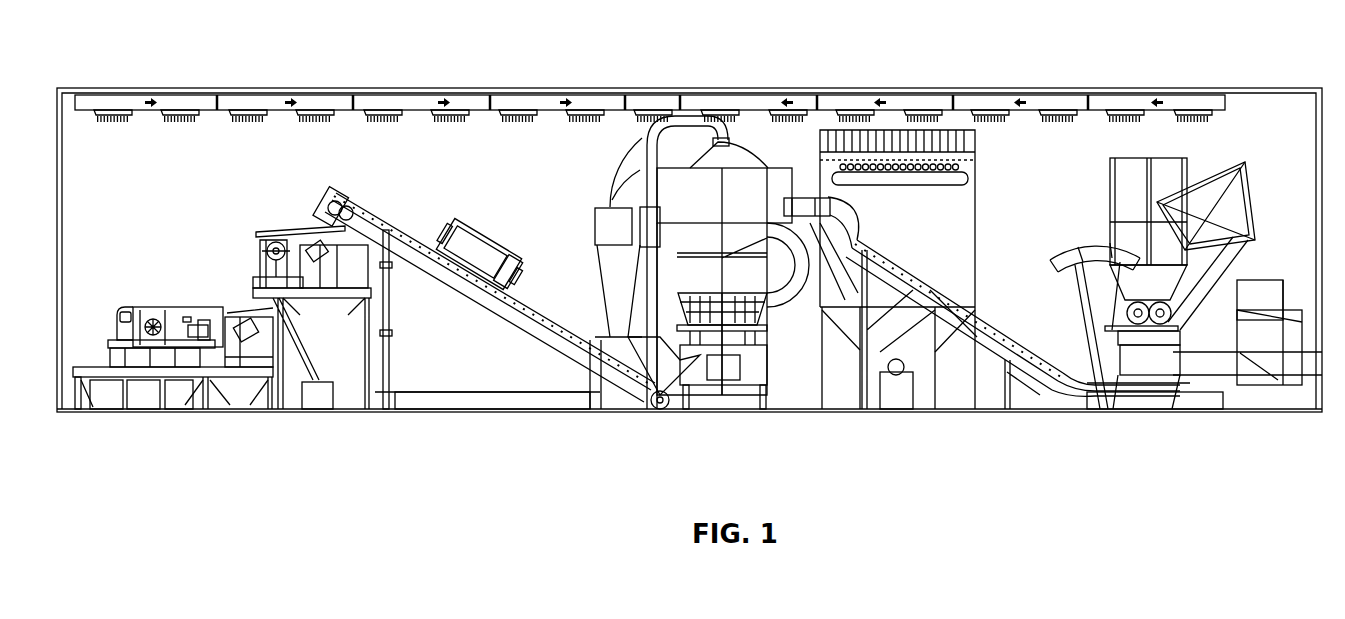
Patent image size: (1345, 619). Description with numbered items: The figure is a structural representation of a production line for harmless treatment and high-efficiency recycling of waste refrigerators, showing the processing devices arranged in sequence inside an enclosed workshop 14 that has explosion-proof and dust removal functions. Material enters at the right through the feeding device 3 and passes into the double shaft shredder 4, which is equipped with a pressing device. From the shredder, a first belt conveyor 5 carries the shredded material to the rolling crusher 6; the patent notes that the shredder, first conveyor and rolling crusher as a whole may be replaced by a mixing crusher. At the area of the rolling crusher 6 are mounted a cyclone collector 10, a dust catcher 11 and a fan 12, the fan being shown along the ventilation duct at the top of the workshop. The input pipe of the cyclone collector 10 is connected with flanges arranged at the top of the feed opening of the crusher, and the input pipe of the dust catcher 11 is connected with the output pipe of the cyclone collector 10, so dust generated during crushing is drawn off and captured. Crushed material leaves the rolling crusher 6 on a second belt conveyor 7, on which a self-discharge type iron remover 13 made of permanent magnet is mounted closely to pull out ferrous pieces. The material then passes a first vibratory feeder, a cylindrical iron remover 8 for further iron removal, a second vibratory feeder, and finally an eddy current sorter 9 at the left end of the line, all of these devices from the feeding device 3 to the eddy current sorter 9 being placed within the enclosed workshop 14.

The feeding device 3 is at (1290, 363).
The double shaft shredder 4 is at (1128, 333).
The first belt conveyor 5 is at (913, 290).
The rolling crusher 6 is at (735, 325).
The second belt conveyor 7 is at (480, 300).
The cylindrical iron remover 8 is at (273, 253).
The eddy current sorter 9 is at (185, 327).
The cyclone collector 10 is at (607, 240).
The dust catcher 11 is at (892, 167).
The fan 12 is at (987, 112).
The self-discharge type iron remover 13 is at (455, 228).
The enclosed workshop 14 is at (1247, 92).